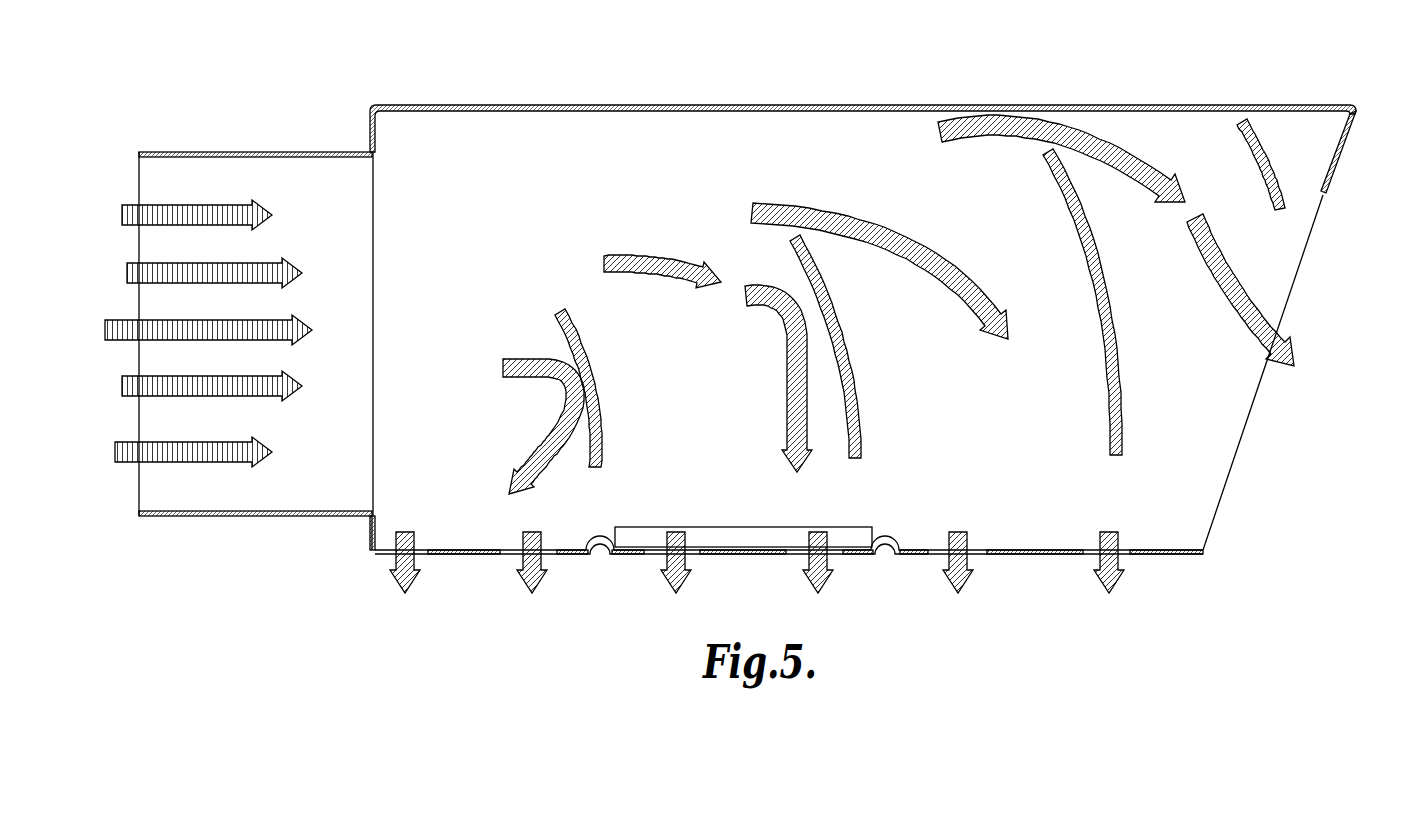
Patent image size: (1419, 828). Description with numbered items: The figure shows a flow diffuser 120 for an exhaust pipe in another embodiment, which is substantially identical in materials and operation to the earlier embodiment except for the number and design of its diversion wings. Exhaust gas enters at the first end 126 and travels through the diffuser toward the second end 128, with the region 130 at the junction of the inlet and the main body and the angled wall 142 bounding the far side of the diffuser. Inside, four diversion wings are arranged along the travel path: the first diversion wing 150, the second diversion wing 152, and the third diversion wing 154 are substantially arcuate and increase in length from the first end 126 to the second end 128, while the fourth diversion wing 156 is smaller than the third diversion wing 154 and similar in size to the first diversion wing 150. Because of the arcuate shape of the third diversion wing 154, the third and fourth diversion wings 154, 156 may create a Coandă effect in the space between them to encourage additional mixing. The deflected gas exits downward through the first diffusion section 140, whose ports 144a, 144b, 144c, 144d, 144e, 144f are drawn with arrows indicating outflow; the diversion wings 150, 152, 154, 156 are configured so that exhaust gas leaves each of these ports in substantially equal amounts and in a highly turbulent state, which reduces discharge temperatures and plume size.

The flow diffuser 120 is at (1013, 77).
The first end 126 is at (139, 160).
The second end 128 is at (1342, 155).
The inlet opening 130 is at (358, 522).
The first diffusion section 140 is at (470, 622).
The angled side wall 142 is at (1317, 233).
The port 144a is at (374, 558).
The port 144b is at (505, 556).
The port 144c is at (655, 556).
The port 144d is at (795, 556).
The port 144e is at (938, 556).
The port 144f is at (1092, 556).
The first diversion wing 150 is at (605, 402).
The second diversion wing 152 is at (848, 330).
The third diversion wing 154 is at (1112, 305).
The fourth diversion wing 156 is at (1265, 152).